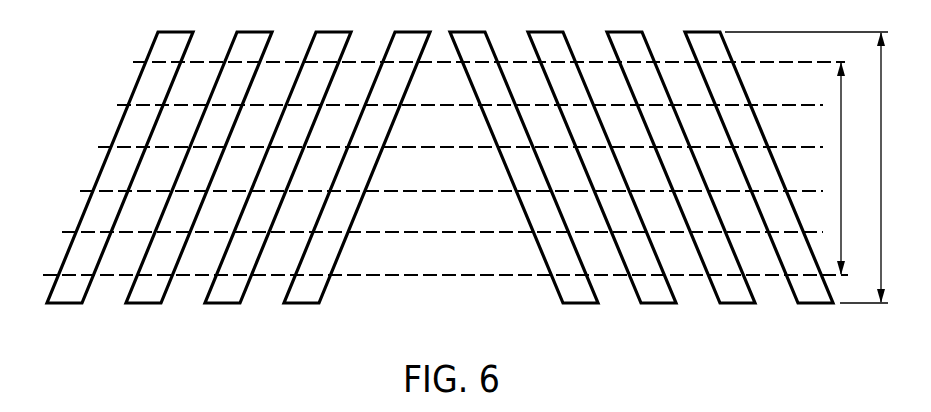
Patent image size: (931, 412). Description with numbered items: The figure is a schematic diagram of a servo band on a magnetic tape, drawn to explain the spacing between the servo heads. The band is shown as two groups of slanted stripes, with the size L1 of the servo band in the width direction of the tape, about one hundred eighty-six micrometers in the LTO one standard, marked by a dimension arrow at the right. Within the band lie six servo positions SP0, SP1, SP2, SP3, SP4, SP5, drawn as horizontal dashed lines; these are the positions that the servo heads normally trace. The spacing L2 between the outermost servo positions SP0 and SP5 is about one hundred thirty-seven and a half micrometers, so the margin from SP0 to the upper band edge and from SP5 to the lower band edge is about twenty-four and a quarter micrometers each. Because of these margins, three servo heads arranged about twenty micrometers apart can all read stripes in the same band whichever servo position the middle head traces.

The servo position SP0 is at (141, 61).
The servo position SP1 is at (124, 104).
The servo position SP2 is at (105, 146).
The servo position SP3 is at (88, 190).
The servo position SP4 is at (68, 231).
The servo position SP5 is at (51, 274).
The size of the servo band in the width direction L1 is at (819, 167).
The spacing between the servo positions SP0 and SP5 L2 is at (853, 168).